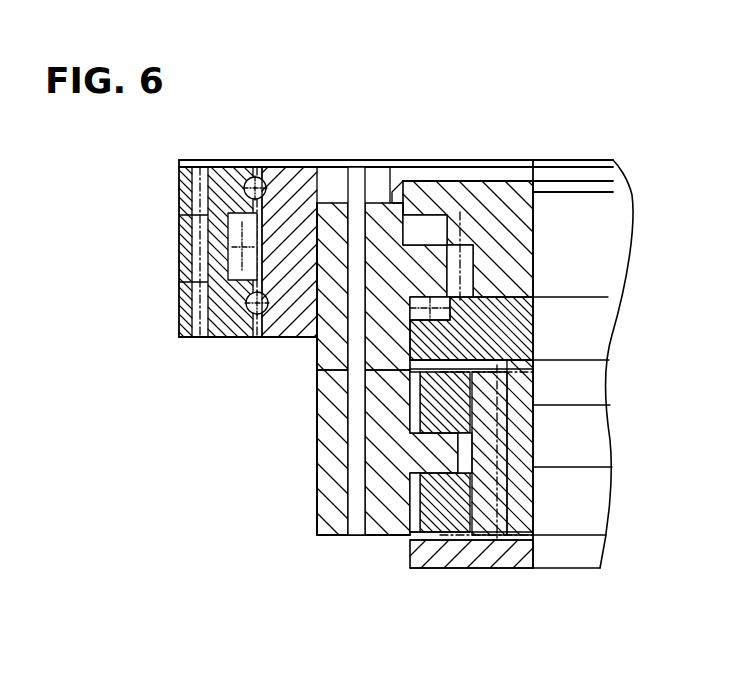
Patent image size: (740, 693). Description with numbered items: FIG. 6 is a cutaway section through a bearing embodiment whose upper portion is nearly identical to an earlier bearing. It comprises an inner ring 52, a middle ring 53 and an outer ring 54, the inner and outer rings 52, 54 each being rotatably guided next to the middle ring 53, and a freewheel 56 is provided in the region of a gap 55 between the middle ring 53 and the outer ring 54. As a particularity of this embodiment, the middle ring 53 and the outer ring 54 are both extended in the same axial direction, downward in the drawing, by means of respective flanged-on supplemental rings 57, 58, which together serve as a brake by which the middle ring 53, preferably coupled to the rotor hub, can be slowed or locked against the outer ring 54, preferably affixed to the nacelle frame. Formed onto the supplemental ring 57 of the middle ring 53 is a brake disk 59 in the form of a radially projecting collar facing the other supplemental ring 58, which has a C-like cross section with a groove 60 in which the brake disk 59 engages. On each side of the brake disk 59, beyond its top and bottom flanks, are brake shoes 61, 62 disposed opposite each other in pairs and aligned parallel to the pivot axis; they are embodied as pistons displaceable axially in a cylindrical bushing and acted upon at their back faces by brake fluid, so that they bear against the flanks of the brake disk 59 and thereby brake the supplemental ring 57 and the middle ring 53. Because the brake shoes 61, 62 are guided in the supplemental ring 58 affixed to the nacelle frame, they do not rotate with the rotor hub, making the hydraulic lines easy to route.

The inner ring 52 is at (452, 198).
The middle ring 53 is at (292, 178).
The outer ring 54 is at (240, 170).
The gap 55 is at (254, 336).
The freewheel 56 is at (158, 290).
The supplemental ring 57 is at (318, 448).
The supplemental ring 58 is at (533, 423).
The brake disk 59 is at (422, 458).
The groove 60 is at (533, 450).
The brake shoe 61 is at (533, 406).
The brake shoe 62 is at (443, 562).